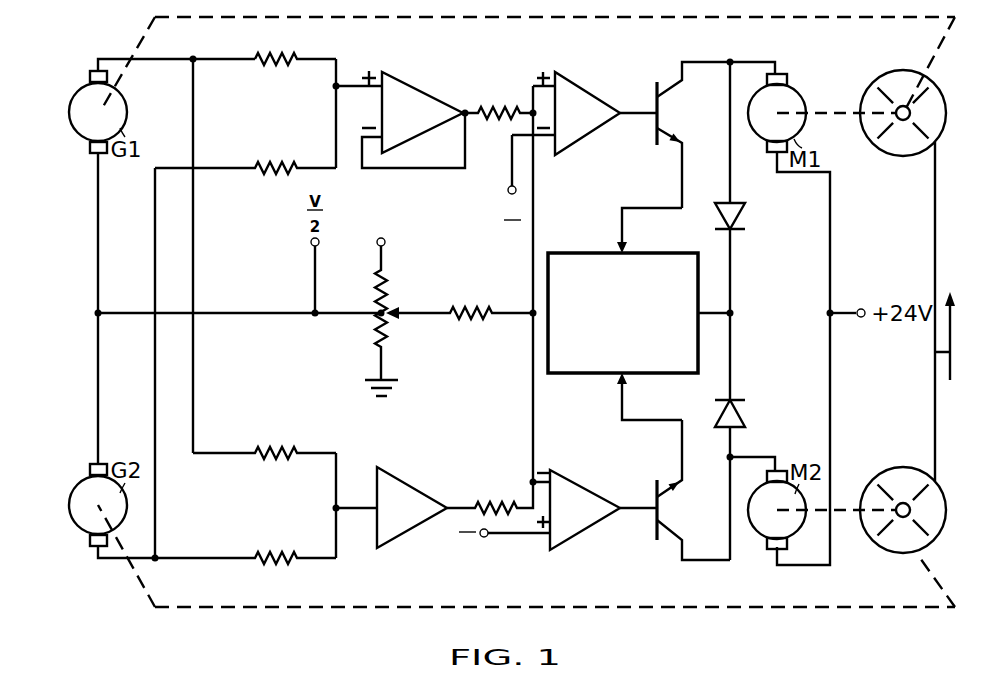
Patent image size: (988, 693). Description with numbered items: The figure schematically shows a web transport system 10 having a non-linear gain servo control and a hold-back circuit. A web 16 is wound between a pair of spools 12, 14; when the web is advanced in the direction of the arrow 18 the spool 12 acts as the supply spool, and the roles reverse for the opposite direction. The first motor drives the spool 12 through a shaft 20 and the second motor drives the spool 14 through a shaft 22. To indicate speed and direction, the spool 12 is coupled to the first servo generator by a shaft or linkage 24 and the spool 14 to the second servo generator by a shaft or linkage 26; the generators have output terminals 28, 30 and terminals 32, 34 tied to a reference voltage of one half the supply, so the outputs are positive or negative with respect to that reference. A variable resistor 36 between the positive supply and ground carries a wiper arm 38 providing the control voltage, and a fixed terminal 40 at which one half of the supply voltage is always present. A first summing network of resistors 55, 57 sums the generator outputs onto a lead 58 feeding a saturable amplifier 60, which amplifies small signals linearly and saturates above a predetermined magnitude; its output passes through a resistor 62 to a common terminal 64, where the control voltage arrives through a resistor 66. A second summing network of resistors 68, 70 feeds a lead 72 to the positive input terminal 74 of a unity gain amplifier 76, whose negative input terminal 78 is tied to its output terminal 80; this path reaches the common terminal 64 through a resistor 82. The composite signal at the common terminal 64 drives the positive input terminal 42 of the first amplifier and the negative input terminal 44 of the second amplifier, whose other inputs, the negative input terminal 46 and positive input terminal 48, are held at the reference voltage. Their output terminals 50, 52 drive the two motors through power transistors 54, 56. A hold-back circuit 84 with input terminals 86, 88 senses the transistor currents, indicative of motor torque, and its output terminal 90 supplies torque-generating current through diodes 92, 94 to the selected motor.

The web transport system 10 is at (460, 58).
The spool 12 is at (895, 160).
The spool 14 is at (893, 468).
The web 16 is at (935, 392).
The arrow 18 is at (935, 352).
The shaft 20 is at (847, 112).
The shaft 22 is at (843, 513).
The shaft or linkage 24 is at (435, 22).
The shaft or linkage 26 is at (340, 612).
The output terminal 28 is at (174, 64).
The output terminal 30 is at (144, 557).
The terminal 32 is at (100, 197).
The terminal 34 is at (100, 436).
The variable resistor 36 is at (388, 280).
The wiper arm 38 is at (440, 318).
The fixed terminal 40 is at (378, 319).
The positive input terminal 42 is at (531, 84).
The negative input terminal 44 is at (538, 478).
The negative input terminal 46 is at (509, 153).
The positive input terminal 48 is at (526, 536).
The output terminal 50 is at (626, 110).
The output terminal 52 is at (632, 512).
The power transistor 54 is at (662, 112).
The resistor 55 is at (272, 450).
The power transistor 56 is at (661, 509).
The resistor 57 is at (268, 555).
The lead 58 is at (343, 506).
The saturable amplifier 60 is at (412, 540).
The resistor 62 is at (490, 505).
The common terminal 64 is at (528, 318).
The resistor 66 is at (476, 308).
The resistor 68 is at (276, 175).
The resistor 70 is at (278, 66).
The lead 72 is at (342, 89).
The positive input terminal 74 is at (381, 72).
The unity gain amplifier 76 is at (428, 96).
The negative input terminal 78 is at (361, 138).
The output terminal 80 is at (460, 100).
The resistor 82 is at (510, 106).
The hold-back circuit 84 is at (607, 356).
The input terminal 86 is at (621, 231).
The input terminal 88 is at (622, 408).
The output terminal 90 is at (730, 320).
The diode 92 is at (745, 211).
The diode 94 is at (745, 410).